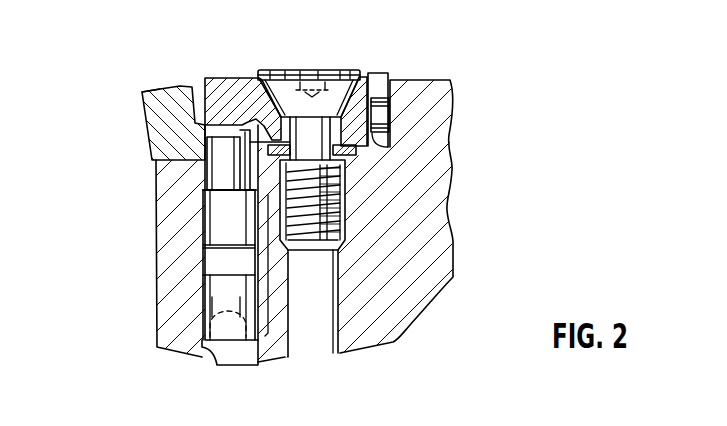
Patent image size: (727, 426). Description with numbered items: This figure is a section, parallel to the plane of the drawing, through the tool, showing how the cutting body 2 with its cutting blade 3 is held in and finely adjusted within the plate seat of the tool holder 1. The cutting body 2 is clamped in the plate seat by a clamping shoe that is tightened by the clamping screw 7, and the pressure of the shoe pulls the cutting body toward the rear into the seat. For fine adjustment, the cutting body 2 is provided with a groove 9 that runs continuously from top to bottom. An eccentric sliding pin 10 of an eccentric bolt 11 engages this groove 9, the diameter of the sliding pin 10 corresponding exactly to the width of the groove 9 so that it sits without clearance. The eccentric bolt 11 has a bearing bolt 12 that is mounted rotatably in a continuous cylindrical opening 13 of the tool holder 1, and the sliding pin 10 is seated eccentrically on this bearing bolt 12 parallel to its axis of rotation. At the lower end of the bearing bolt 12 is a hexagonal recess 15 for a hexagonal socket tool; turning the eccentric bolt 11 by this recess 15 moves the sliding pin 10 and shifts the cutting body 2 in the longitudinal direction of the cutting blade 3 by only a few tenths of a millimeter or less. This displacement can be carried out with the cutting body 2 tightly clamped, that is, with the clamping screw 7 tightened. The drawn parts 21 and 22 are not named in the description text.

The tool holder 1 is at (442, 133).
The cutting body 2 is at (142, 121).
The cutting blade 3 is at (142, 91).
The clamping screw 7 is at (320, 70).
The groove 9 is at (217, 130).
The eccentric sliding pin 10 is at (226, 152).
The eccentric bolt 11 is at (221, 212).
The bearing bolt 12 is at (273, 250).
The cylindrical opening 13 is at (212, 350).
The hexagonal recess 15 is at (236, 337).
The clip 21 is at (379, 78).
The insert 22 is at (388, 114).